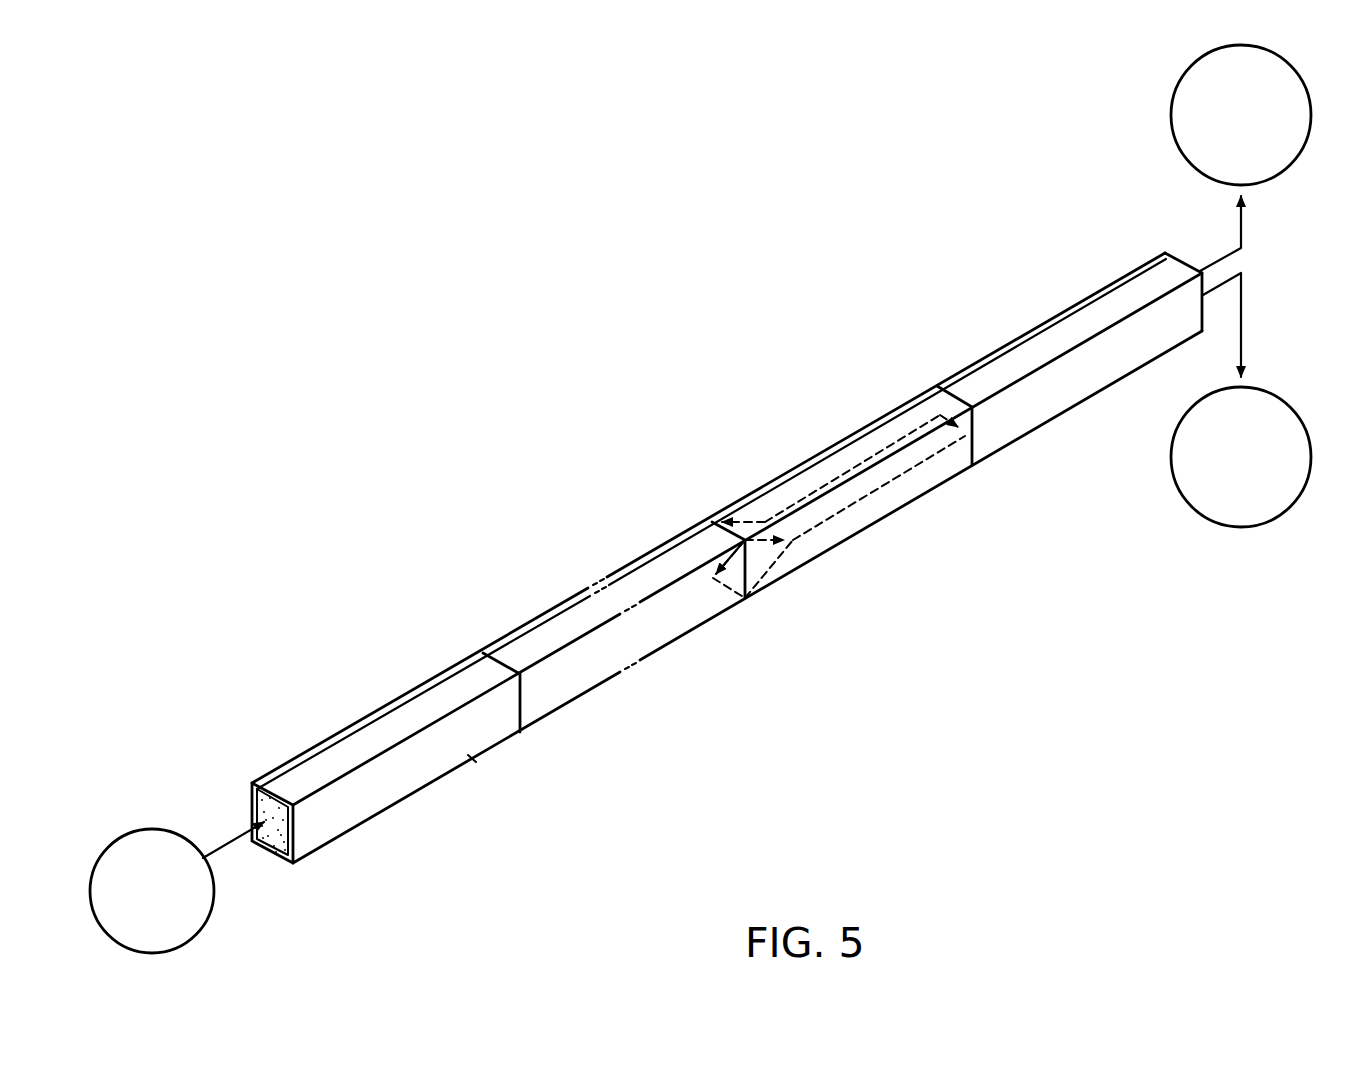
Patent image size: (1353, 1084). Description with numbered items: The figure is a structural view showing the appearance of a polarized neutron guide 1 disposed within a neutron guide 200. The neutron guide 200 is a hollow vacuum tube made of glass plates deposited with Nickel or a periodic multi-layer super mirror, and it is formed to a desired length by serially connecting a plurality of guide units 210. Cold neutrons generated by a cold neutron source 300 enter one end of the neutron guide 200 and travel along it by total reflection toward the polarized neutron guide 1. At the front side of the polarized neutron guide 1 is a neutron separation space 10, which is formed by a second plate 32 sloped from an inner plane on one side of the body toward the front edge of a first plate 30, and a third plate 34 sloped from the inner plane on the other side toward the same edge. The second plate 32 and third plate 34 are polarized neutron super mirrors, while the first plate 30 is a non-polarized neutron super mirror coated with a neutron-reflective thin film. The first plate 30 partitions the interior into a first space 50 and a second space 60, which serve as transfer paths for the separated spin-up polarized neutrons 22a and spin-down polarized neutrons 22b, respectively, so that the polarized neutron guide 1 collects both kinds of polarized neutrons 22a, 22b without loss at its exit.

The polarized neutron guide 1 is at (750, 448).
The neutron separation space 10 is at (736, 568).
The first plate 30 is at (870, 495).
The second plate 32 is at (740, 517).
The third plate 34 is at (772, 560).
The first space 50 is at (883, 471).
The second space 60 is at (920, 475).
The neutron guide 200 is at (404, 570).
The guide unit 210 is at (545, 705).
The cold neutron source 300 is at (120, 833).
The spin-up polarized neutrons 22a is at (1170, 123).
The spin-down polarized neutrons 22b is at (1237, 528).